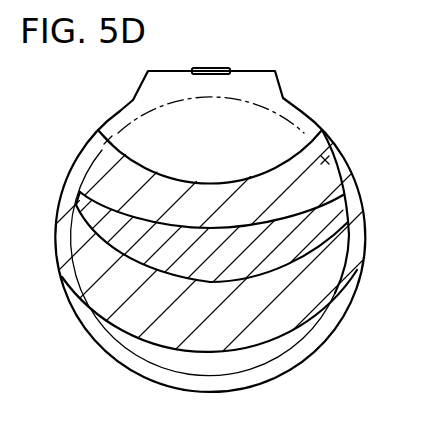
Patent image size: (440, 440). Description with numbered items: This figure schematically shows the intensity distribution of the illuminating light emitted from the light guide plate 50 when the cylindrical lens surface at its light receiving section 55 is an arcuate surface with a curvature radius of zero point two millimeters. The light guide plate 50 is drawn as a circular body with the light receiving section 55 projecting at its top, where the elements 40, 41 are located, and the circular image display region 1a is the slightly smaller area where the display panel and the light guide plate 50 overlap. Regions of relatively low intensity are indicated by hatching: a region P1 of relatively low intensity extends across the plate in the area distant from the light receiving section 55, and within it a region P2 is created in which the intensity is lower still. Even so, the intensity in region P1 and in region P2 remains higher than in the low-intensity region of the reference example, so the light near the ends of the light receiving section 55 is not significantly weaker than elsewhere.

The light guide plate 50 is at (302, 107).
The light receiving section 55 is at (200, 67).
The light emitting element 40 is at (212, 67).
The light emitting element 41 is at (233, 47).
The image display region 1a is at (330, 160).
The region where the intensity is relatively low P1 is at (283, 287).
The region where the intensity is lower than in region P1 P2 is at (205, 281).